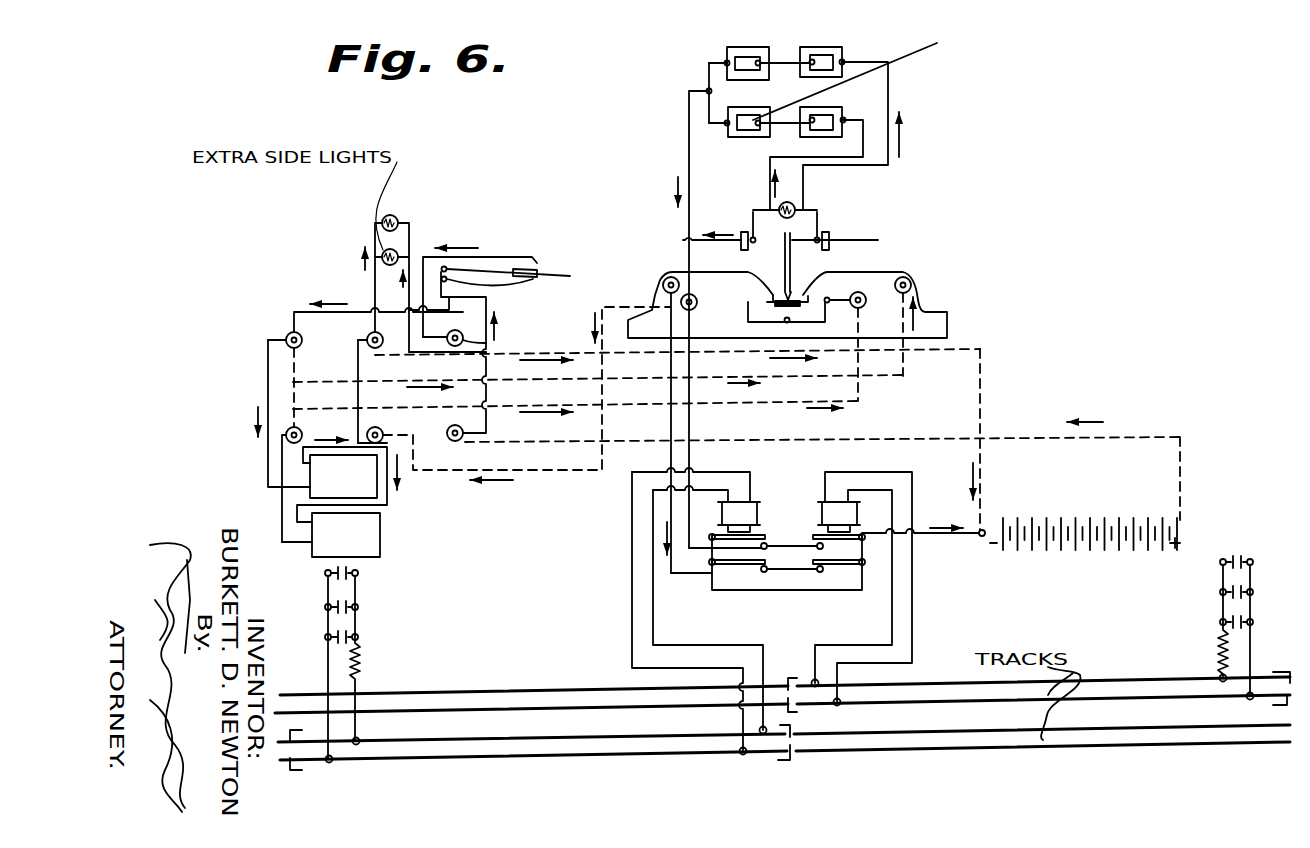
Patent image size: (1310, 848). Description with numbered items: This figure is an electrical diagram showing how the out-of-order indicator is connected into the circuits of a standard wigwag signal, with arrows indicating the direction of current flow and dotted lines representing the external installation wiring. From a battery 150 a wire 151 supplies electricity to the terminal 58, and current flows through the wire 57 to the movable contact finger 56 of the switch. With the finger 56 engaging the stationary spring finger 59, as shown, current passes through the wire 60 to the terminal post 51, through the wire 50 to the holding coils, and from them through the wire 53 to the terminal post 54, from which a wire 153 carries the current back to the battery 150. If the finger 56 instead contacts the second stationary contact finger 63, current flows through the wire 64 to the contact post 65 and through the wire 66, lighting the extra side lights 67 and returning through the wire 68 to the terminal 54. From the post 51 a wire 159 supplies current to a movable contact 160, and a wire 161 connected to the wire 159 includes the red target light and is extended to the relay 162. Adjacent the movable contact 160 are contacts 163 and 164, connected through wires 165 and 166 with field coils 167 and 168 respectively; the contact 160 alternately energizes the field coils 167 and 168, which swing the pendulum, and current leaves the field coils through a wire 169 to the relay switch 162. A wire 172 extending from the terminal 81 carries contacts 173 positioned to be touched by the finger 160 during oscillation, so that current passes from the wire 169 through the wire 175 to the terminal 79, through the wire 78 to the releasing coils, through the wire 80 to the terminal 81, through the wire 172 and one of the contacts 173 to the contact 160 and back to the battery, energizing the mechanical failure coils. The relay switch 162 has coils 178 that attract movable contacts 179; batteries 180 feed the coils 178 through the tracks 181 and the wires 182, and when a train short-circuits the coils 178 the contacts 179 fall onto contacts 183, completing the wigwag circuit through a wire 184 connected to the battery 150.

The wire 50 is at (268, 348).
The terminal post 51 is at (288, 333).
The wire 53 is at (360, 423).
The terminal post 54 is at (375, 330).
The movable contact finger 56 is at (548, 272).
The wire 57 is at (488, 343).
The terminal 58 is at (450, 440).
The stationary spring finger 59 is at (505, 283).
The wire 60 is at (449, 311).
The second stationary contact finger 63 is at (500, 256).
The wire 64 is at (417, 270).
The contact post 65 is at (490, 343).
The wire 66 is at (412, 245).
The extra side lights 67 is at (392, 215).
The wire 68 is at (383, 255).
The wire 78 is at (387, 505).
The terminal 79 is at (383, 432).
The wire 80 is at (293, 545).
The terminal 81 is at (288, 442).
The battery 150 is at (1123, 547).
The wire 151 is at (1140, 432).
The wire 153 is at (980, 348).
The wire 159 is at (293, 372).
The movable contact 160 is at (803, 282).
The wire 161 is at (697, 237).
The relay switch 162 is at (803, 570).
The contact 163 is at (893, 266).
The contact 164 is at (773, 292).
The wire 165 is at (890, 165).
The wire 166 is at (823, 157).
The field coils 167 is at (823, 63).
The field coils 168 is at (823, 120).
The wire 169 is at (688, 163).
The wire 172 is at (730, 403).
The contacts 173 is at (830, 300).
The wire 175 is at (602, 300).
The coils 178 is at (747, 515).
The movable contacts 179 is at (757, 537).
The batteries 180 is at (348, 622).
The tracks 181 is at (472, 745).
The wires 182 is at (653, 577).
The contacts 183 is at (766, 572).
The wire 184 is at (950, 558).